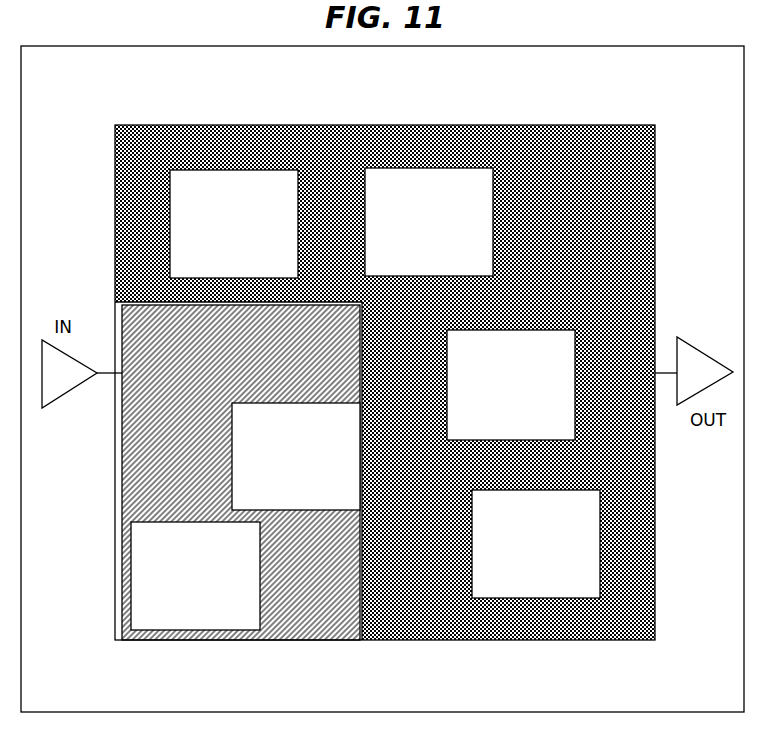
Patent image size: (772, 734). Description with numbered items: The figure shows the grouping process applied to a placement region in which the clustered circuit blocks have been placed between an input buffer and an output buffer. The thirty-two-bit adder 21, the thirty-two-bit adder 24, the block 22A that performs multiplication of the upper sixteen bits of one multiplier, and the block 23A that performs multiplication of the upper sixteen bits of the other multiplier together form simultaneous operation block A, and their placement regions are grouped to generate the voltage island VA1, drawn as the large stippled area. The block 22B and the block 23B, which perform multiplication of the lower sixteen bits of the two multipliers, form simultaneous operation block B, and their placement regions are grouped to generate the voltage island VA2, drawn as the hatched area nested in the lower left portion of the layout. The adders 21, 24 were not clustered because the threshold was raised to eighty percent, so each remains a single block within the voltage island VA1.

The 32-bit adder 21 is at (237, 183).
The block performing multiplication of the upper 16 bits 22A is at (428, 183).
The block performing multiplication of the lower 16 bits 22B is at (195, 618).
The block performing multiplication of the upper 16 bits 23A is at (550, 340).
The block performing multiplication of the lower 16 bits 23B is at (242, 455).
The 32-bit adder 24 is at (530, 583).
The voltage island VA1 is at (613, 132).
The voltage island VA2 is at (333, 620).